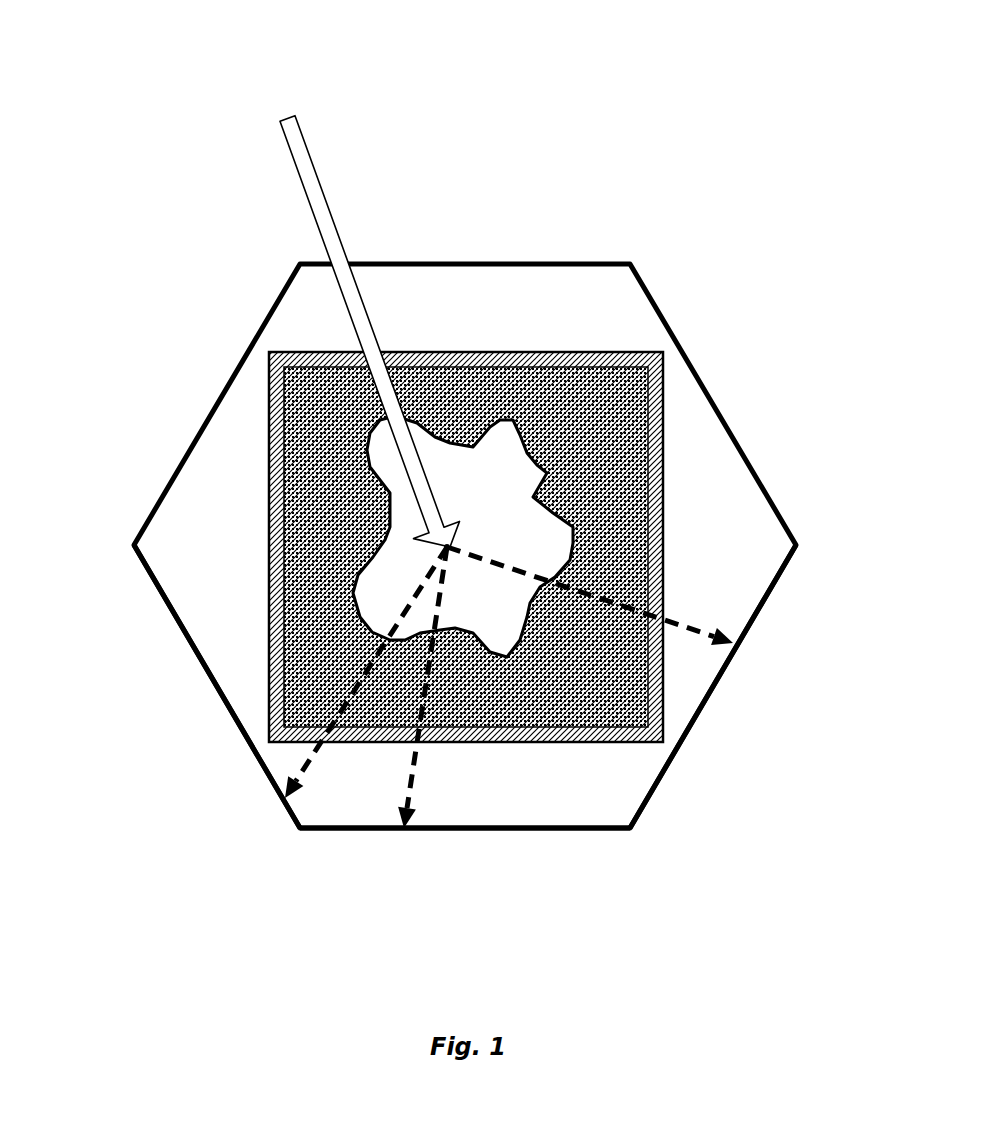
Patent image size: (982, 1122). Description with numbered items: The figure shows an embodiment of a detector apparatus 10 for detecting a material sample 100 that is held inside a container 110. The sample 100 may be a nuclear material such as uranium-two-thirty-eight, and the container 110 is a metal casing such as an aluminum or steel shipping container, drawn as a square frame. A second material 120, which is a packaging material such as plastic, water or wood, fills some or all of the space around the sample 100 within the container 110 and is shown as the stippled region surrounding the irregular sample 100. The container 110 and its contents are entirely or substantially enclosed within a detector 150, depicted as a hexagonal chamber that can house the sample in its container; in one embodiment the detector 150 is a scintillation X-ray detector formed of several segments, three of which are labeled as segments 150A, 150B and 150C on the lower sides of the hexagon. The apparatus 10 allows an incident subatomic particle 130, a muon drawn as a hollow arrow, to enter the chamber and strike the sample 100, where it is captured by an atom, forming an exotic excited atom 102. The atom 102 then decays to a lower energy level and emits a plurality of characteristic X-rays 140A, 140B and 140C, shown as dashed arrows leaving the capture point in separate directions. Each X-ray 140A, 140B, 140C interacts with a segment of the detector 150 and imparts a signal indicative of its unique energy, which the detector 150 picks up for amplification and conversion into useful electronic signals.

The detector apparatus 10 is at (94, 35).
The material sample 100 is at (367, 552).
The exotic atom 102 is at (457, 540).
The container 110 is at (522, 350).
The second material 120 is at (557, 407).
The incident subatomic particle 130 is at (340, 243).
The characteristic X-ray 140A is at (683, 617).
The characteristic X-ray 140B is at (405, 765).
The characteristic X-ray 140C is at (300, 773).
The detector 150 is at (433, 260).
The detector segment 150A is at (707, 700).
The detector segment 150B is at (482, 830).
The detector segment 150C is at (152, 588).